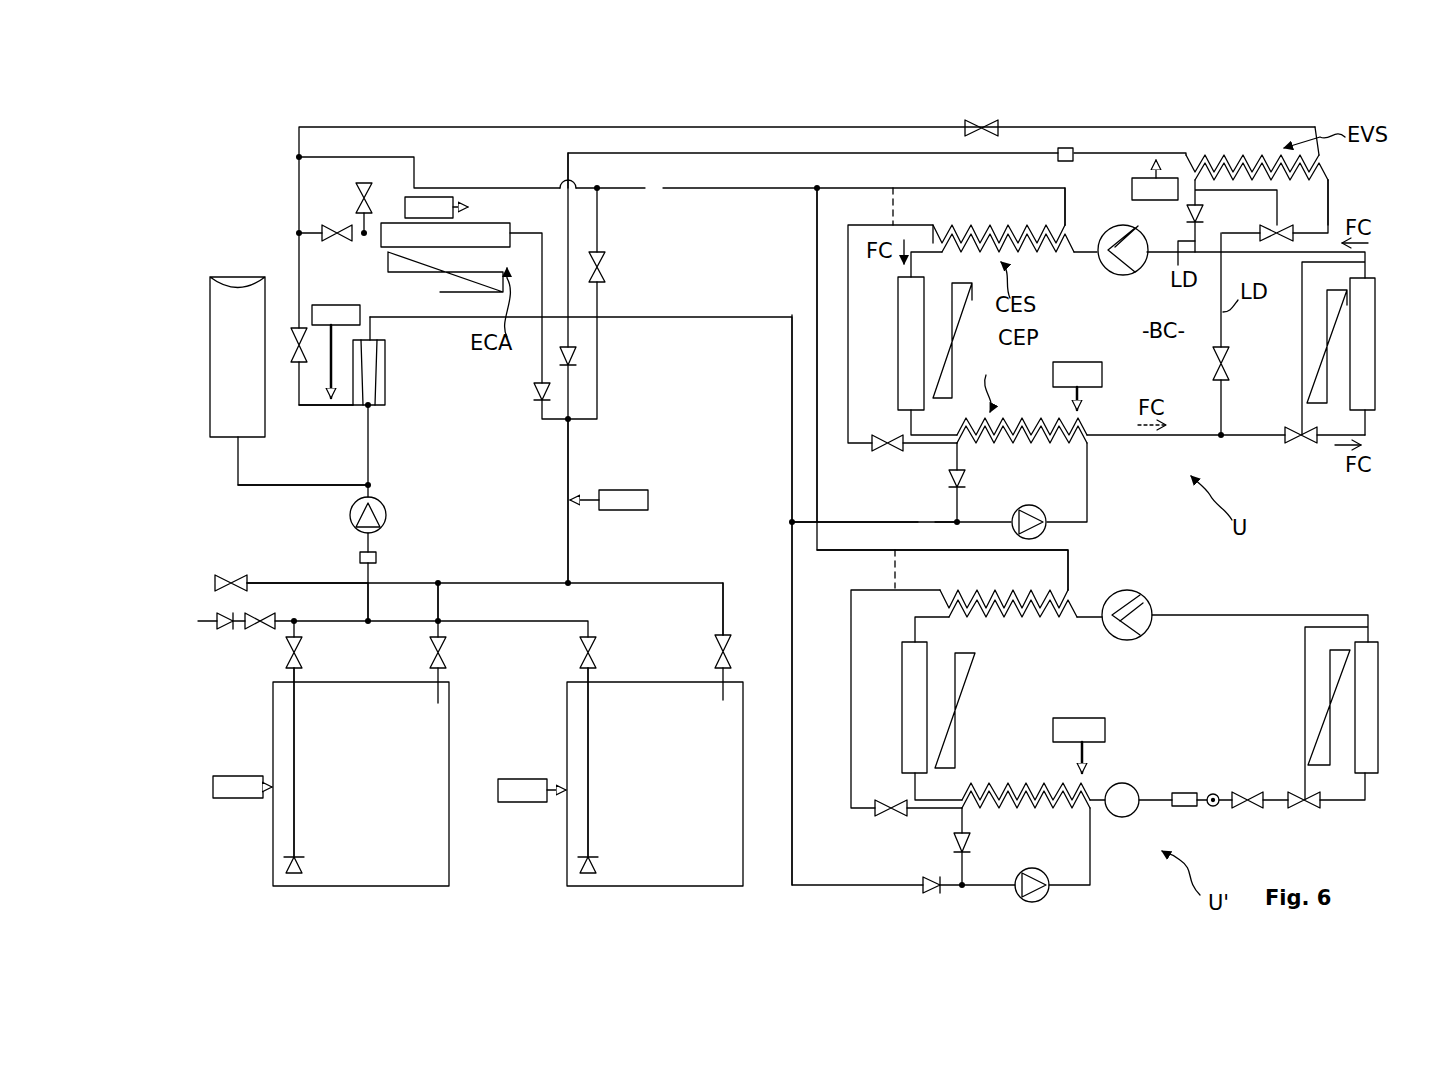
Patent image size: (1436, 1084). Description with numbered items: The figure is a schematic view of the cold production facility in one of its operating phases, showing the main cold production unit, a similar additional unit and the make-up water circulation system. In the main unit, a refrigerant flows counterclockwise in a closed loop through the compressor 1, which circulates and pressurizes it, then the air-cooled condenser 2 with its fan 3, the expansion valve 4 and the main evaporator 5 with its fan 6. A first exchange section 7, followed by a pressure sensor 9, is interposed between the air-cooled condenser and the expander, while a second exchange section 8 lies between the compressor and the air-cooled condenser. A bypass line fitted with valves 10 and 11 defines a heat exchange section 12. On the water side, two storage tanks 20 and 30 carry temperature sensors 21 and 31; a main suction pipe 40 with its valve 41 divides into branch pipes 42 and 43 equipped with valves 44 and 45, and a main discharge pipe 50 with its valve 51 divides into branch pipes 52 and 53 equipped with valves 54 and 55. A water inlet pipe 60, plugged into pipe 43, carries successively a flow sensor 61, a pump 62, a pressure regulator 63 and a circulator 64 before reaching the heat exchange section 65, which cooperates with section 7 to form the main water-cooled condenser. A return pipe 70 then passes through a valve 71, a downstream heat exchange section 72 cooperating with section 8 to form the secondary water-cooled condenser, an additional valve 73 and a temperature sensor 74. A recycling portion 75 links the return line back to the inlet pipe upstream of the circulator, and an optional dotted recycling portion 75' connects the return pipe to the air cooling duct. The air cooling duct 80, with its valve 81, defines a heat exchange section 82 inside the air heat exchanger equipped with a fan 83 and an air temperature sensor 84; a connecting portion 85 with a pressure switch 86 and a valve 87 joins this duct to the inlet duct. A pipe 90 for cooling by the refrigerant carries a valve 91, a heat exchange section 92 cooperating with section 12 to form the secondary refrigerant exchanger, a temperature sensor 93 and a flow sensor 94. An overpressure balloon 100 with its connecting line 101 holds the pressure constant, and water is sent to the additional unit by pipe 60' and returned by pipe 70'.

The compressor 1 is at (1102, 264).
The air-cooled condenser 2 is at (910, 338).
The fan 3 is at (960, 303).
The expansion valve 4 is at (1299, 446).
The main evaporator 5 is at (1372, 357).
The fan 6 is at (1327, 317).
The first exchange section 7 is at (1041, 417).
The second exchange section 8 is at (1050, 254).
The pressure sensor 9 is at (1090, 372).
The valve 10 is at (1230, 365).
The valve 11 is at (1272, 226).
The heat exchange section 12 is at (1300, 180).
The storage tank 20 is at (374, 812).
The temperature sensor 21 is at (233, 790).
The storage tank 30 is at (674, 812).
The temperature sensor 31 is at (522, 790).
The main suction pipe 40 is at (223, 628).
The valve 41 is at (266, 631).
The branch pipe 42 is at (296, 708).
The branch pipe 43 is at (590, 710).
The valve 44 is at (303, 660).
The valve 45 is at (598, 660).
The main discharge pipe 50 is at (293, 583).
The valve 51 is at (229, 576).
The branch pipe 52 is at (441, 600).
The branch pipe 53 is at (726, 603).
The valve 54 is at (447, 654).
The valve 55 is at (735, 655).
The water inlet pipe 60 is at (662, 468).
The pipe 60' is at (817, 703).
The flow sensor 61 is at (378, 557).
The pump 62 is at (386, 512).
The pressure regulator 63 is at (385, 356).
The circulator 64 is at (1038, 508).
The heat exchange section 65 is at (1045, 446).
The return pipe 70 is at (722, 465).
The pipe 70' is at (980, 569).
The valve 71 is at (884, 451).
The downstream heat exchange section 72 is at (994, 226).
The additional valve 73 is at (601, 274).
The temperature sensor 74 is at (627, 500).
The recycling portion 75 is at (936, 485).
The recycling portion 75' is at (855, 355).
The air cooling duct 80 is at (299, 203).
The valve 81 is at (338, 242).
The heat exchange section 82 is at (498, 234).
The fan 83 is at (400, 275).
The air temperature sensor 84 is at (405, 207).
The connecting portion 85 is at (299, 253).
The pressure switch 86 is at (340, 306).
The valve 87 is at (299, 336).
The pipe for cooling by the refrigerant 90 is at (337, 127).
The valve 91 is at (972, 118).
The heat exchange section 92 is at (1238, 152).
The temperature sensor 93 is at (1163, 196).
The flow sensor 94 is at (1068, 162).
The overpressure balloon 100 is at (225, 370).
The connecting line 101 is at (283, 485).